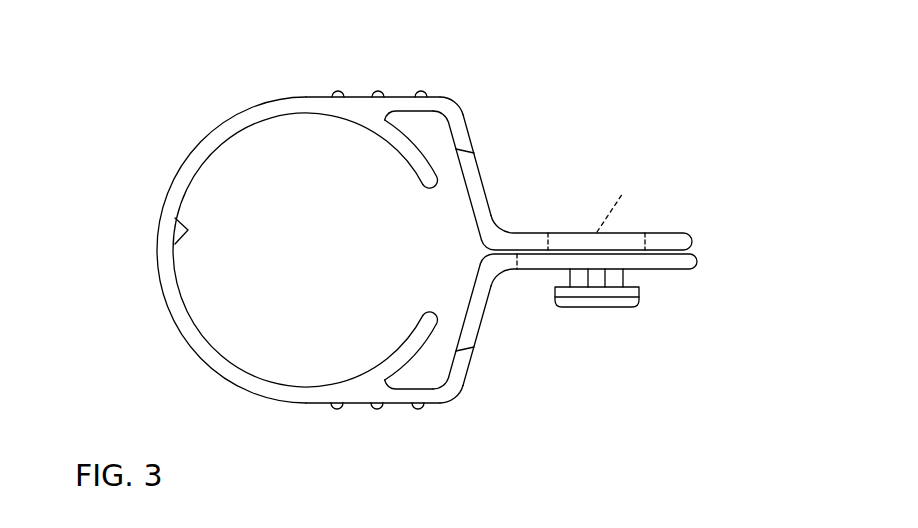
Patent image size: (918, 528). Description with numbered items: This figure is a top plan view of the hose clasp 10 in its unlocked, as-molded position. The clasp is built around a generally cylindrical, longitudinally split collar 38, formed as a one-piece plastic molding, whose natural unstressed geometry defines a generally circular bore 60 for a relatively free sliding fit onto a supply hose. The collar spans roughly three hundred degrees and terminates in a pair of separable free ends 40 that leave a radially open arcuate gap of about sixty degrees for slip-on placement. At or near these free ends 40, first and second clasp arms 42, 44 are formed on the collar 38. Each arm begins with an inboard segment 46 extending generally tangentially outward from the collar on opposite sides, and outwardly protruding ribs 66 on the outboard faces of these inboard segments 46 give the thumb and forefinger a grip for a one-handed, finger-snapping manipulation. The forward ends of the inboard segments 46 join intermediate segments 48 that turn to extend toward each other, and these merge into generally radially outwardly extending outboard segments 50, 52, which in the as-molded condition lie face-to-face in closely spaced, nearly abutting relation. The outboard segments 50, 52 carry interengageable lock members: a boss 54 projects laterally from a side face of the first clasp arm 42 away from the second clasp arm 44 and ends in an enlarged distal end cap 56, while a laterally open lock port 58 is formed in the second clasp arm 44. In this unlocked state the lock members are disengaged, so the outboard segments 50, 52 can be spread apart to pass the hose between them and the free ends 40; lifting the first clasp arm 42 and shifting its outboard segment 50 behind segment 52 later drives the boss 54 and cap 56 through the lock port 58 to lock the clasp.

The hose clasp 10 is at (177, 127).
The split collar 38 is at (205, 360).
The free ends 40 is at (424, 178).
The first clasp arm 42 is at (455, 397).
The second clasp arm 44 is at (467, 122).
The inboard segment 46 is at (402, 95).
The intermediate segment 48 is at (483, 190).
The outboard segment of first clasp arm 50 is at (698, 258).
The outboard segment of second clasp arm 52 is at (673, 233).
The boss 54 is at (623, 275).
The distal end cap 56 is at (628, 307).
The lock port 58 is at (624, 208).
The circular bore 60 is at (175, 218).
The ribs 66 is at (383, 94).